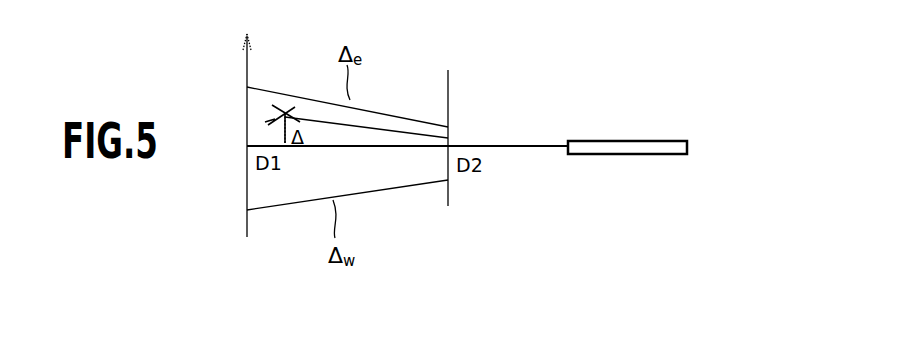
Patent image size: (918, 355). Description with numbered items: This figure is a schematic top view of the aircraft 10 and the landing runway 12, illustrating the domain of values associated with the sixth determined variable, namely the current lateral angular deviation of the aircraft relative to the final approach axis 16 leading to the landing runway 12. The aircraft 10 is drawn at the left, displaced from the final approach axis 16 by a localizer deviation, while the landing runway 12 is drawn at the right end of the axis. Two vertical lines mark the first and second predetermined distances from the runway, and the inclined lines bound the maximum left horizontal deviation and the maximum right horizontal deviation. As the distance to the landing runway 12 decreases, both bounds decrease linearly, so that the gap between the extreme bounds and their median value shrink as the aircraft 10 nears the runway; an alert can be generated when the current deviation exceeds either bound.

The aircraft 10 is at (285, 104).
The landing runway 12 is at (620, 141).
The final approach axis 16 is at (499, 148).